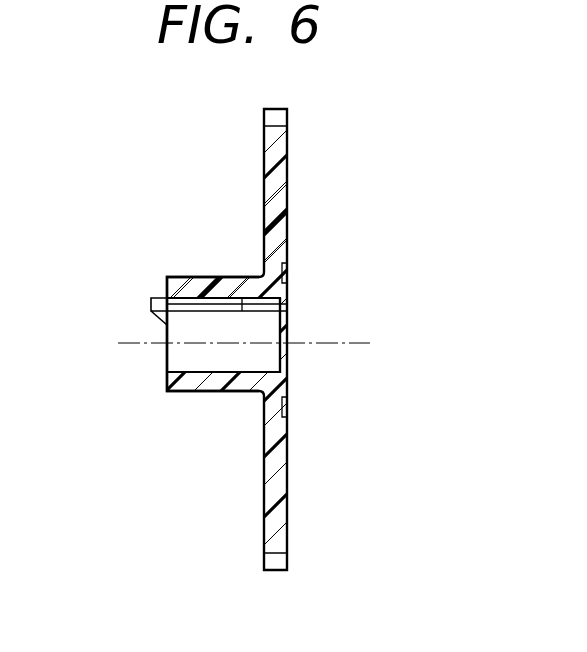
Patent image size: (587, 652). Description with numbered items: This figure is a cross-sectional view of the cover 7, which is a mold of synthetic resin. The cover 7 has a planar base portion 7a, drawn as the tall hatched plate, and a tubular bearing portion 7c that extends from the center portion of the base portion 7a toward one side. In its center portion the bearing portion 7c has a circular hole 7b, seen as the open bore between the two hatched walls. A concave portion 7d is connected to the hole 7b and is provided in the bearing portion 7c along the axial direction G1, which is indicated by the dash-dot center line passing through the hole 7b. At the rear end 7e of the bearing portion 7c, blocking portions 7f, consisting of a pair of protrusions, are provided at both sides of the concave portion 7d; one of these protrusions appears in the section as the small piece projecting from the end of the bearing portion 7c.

The cover 7 is at (292, 154).
The planar base portion 7a is at (289, 192).
The circular hole 7b is at (195, 372).
The tubular bearing portion 7c is at (205, 393).
The concave portion 7d is at (242, 310).
The rear end 7e is at (168, 288).
The blocking portions 7f is at (151, 305).
The axial direction G1 is at (330, 343).